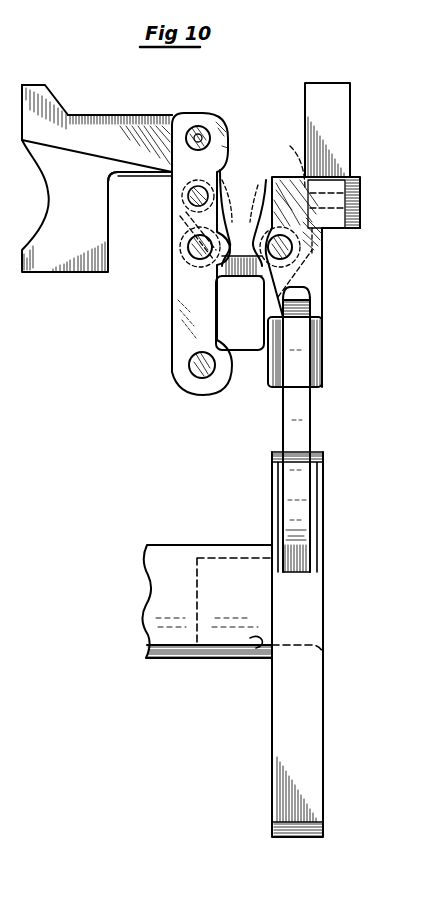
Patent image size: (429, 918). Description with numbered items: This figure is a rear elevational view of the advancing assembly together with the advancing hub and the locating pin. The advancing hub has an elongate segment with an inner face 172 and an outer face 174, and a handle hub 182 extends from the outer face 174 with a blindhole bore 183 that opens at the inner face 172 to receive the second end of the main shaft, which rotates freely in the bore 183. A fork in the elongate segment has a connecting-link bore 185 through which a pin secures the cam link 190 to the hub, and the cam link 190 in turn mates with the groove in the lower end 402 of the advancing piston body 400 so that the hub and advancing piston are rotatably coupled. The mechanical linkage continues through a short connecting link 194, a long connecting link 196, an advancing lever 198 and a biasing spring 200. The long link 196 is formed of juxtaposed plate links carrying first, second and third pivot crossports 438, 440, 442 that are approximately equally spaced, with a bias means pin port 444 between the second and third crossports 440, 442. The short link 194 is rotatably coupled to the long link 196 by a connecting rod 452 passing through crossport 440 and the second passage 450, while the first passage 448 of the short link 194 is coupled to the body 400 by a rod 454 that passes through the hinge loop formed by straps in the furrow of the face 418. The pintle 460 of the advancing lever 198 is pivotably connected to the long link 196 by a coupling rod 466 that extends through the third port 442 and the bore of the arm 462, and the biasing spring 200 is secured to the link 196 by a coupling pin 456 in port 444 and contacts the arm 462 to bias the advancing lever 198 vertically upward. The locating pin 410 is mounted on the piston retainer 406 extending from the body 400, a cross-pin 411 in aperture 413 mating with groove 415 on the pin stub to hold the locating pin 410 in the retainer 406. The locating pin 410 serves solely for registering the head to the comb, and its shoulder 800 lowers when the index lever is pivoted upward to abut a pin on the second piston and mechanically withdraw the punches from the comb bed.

The pintle 460 is at (25, 83).
The advancing lever 198 is at (90, 108).
The arm 462 is at (135, 120).
The biasing spring 200 is at (140, 174).
The long connecting link 196 is at (166, 333).
The third pivot crossport 442 is at (203, 127).
The coupling rod 466 is at (206, 134).
The coupling pin 456 is at (186, 204).
The bias means pin port 444 is at (182, 241).
The second pivot crossport 440 is at (190, 256).
The connecting rod 452 is at (196, 262).
The first pivot crossport 438 is at (192, 376).
The short connecting link 194 is at (240, 232).
The rod 454 is at (277, 259).
The first passage 448 is at (278, 297).
The face 418 is at (272, 322).
The advancing piston body 400 is at (324, 278).
The second passage 450 is at (323, 262).
The locating pin 410 is at (352, 104).
The piston retainer 406 is at (361, 178).
The groove 415 is at (346, 203).
The cross-pin 411 is at (286, 157).
The aperture 413 is at (287, 195).
The shoulder 800 is at (350, 231).
The lower end 402 is at (318, 388).
The cam link 190 is at (314, 440).
The connecting-link bore 185 is at (312, 520).
The inner face 172 is at (325, 798).
The outer face 174 is at (271, 773).
The handle hub 182 is at (192, 658).
The blindhole bore 183 is at (260, 656).